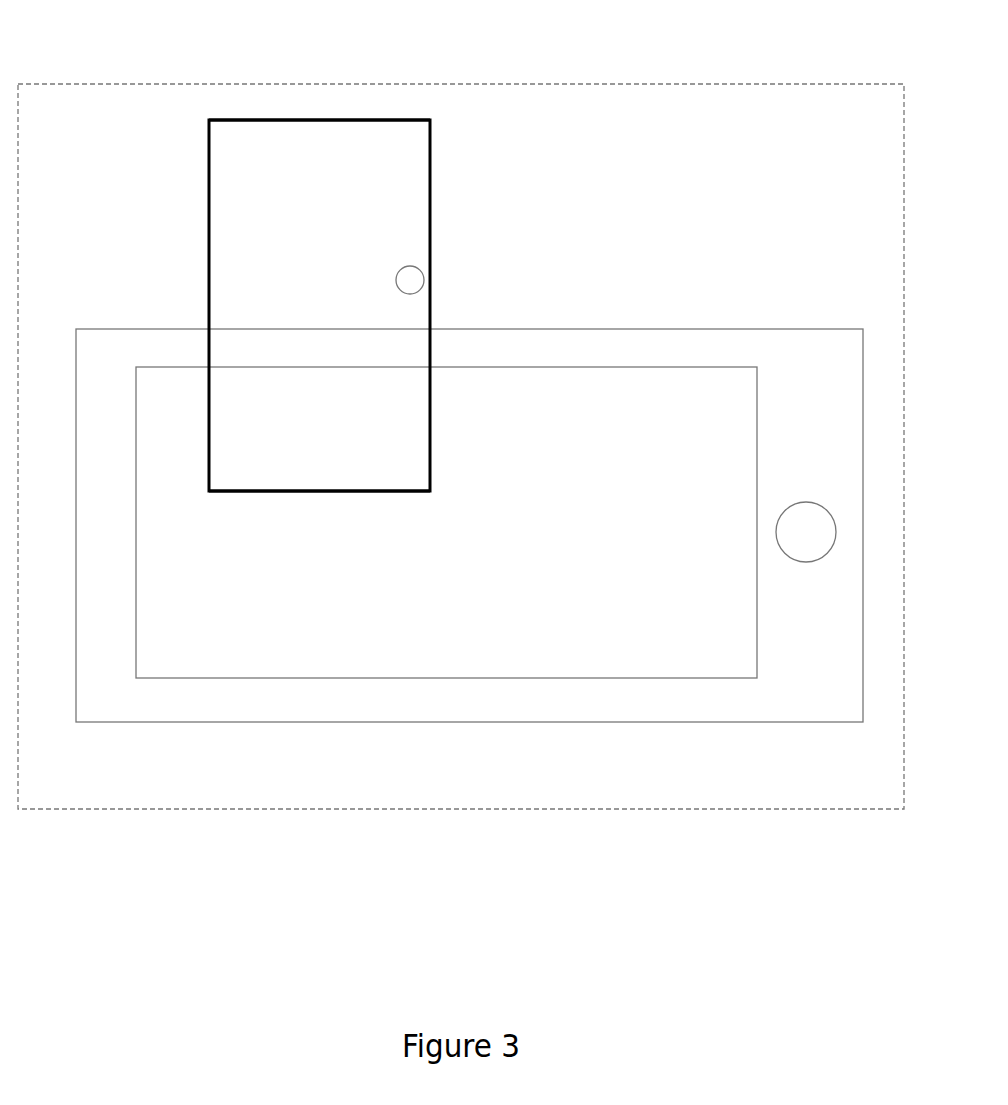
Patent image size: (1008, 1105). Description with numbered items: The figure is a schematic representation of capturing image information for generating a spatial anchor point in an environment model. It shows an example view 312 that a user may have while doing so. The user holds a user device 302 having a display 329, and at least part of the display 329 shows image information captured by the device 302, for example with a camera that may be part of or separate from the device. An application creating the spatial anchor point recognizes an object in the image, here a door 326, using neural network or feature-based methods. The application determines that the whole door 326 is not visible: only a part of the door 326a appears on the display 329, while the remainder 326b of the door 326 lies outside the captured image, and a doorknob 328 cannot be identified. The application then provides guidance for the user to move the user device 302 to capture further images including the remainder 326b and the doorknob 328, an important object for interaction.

The user device 302 is at (226, 722).
The example view 312 is at (262, 808).
The door 326 is at (235, 122).
The part of door 326a is at (312, 463).
The remainder of object 326b is at (225, 182).
The doorknob 328 is at (420, 267).
The display 329 is at (609, 677).